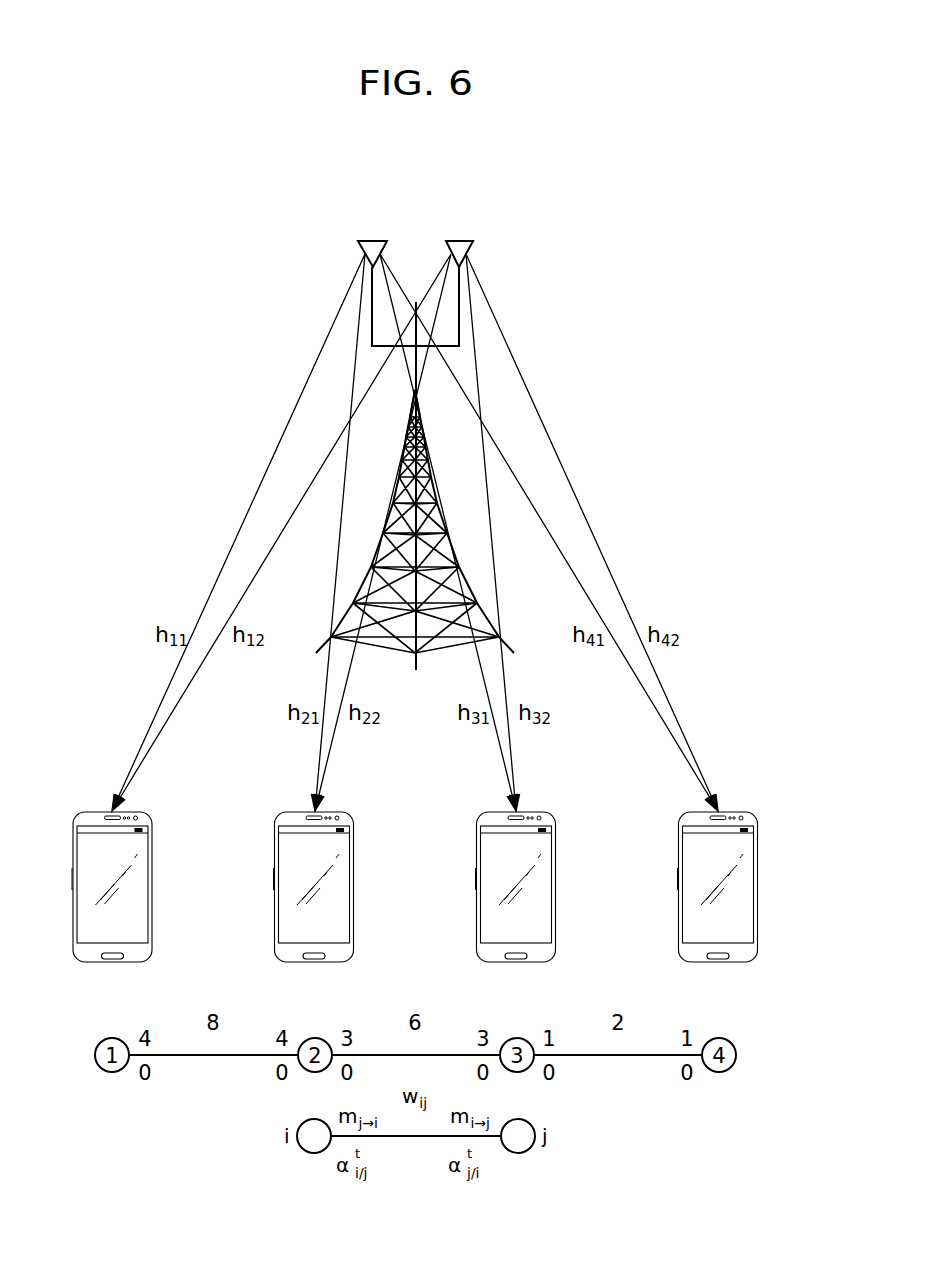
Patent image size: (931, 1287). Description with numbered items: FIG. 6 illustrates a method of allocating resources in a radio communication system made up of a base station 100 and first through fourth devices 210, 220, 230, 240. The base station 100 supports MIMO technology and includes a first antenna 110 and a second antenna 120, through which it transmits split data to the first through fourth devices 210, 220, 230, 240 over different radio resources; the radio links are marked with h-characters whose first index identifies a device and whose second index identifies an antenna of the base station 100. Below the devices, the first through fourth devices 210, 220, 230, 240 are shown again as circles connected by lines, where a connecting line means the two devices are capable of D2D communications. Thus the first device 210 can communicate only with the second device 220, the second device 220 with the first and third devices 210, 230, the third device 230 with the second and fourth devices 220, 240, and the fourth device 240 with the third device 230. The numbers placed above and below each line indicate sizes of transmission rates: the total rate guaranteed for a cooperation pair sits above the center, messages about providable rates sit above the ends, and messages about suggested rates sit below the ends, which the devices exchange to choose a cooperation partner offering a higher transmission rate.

The base station 100 is at (416, 418).
The first antenna 110 is at (370, 240).
The second antenna 120 is at (462, 240).
The first device 210 is at (112, 963).
The second device 220 is at (315, 963).
The third device 230 is at (517, 963).
The fourth device 240 is at (719, 963).